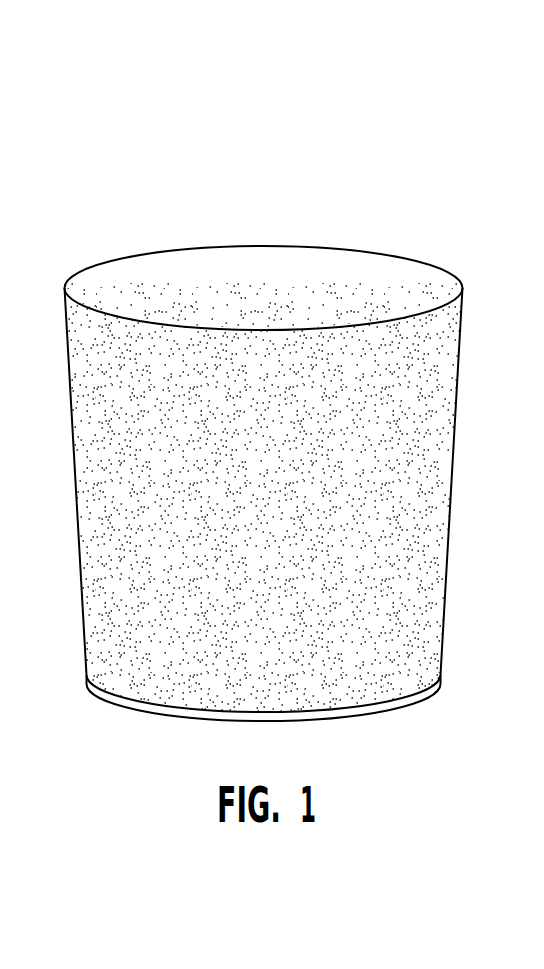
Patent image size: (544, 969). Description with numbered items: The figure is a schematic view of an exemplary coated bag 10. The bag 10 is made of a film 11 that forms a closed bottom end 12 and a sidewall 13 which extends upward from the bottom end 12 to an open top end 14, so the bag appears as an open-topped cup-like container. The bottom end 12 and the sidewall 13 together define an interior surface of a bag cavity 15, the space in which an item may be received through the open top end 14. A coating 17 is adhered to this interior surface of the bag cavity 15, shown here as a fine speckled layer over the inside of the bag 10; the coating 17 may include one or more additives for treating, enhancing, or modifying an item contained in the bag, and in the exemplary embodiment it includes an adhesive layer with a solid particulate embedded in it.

The coated bag 10 is at (222, 192).
The film 11 is at (412, 567).
The closed bottom end 12 is at (385, 708).
The sidewall 13 is at (353, 453).
The open top end 14 is at (365, 252).
The bag cavity 15 is at (428, 268).
The coating 17 is at (239, 297).